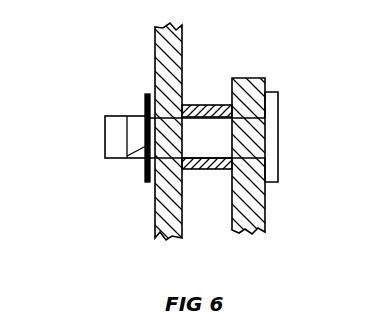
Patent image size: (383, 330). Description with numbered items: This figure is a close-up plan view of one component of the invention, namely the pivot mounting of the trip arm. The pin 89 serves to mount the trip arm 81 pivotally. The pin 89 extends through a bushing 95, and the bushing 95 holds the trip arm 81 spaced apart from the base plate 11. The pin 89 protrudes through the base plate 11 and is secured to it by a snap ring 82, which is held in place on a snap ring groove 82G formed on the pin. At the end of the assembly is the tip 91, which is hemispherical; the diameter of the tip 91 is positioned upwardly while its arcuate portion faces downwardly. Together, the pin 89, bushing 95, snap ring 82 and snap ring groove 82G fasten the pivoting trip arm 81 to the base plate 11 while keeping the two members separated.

The base plate 11 is at (155, 210).
The trip arm 81 is at (265, 207).
The snap ring 82 is at (145, 110).
The snap ring groove 82G is at (120, 158).
The pin 89 is at (262, 133).
The tip 91 is at (117, 133).
The bushing 95 is at (192, 104).